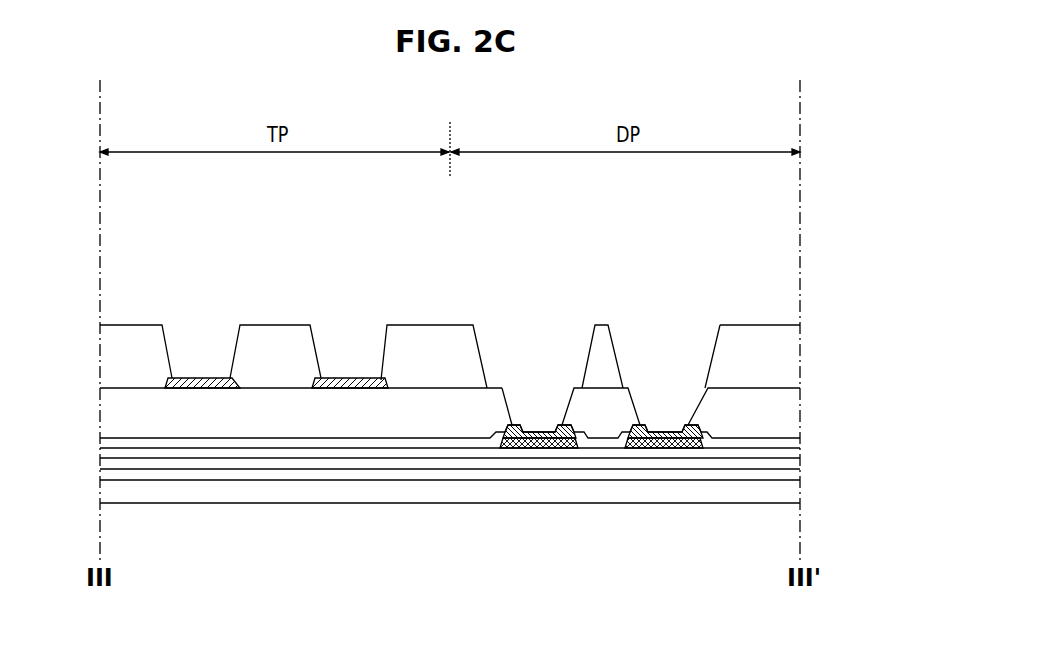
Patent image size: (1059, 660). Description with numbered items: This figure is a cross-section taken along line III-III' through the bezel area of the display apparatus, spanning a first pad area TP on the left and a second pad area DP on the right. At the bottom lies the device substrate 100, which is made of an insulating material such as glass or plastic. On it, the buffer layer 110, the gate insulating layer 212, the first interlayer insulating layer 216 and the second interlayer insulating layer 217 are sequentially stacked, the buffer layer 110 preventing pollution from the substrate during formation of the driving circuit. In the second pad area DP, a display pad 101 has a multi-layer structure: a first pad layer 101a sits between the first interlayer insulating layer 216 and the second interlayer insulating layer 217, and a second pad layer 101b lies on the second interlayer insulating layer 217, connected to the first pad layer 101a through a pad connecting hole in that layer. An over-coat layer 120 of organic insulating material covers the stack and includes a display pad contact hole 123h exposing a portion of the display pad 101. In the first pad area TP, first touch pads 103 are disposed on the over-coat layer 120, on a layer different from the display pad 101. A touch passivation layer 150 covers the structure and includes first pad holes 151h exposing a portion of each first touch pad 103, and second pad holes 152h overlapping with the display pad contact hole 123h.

The device substrate 100 is at (787, 492).
The buffer layer 110 is at (110, 476).
The gate insulating layer 212 is at (787, 463).
The first interlayer insulating layer 216 is at (110, 452).
The second interlayer insulating layer 217 is at (787, 440).
The over-coat layer 120 is at (110, 405).
The display pad contact hole 123h is at (500, 405).
The first touch pad 103 is at (200, 387).
The touch passivation layer 150 is at (110, 357).
The first pad hole 151h is at (309, 359).
The second pad hole 152h is at (720, 357).
The display pad 101 is at (606, 525).
The first pad layer 101a is at (634, 448).
The second pad layer 101b is at (686, 448).